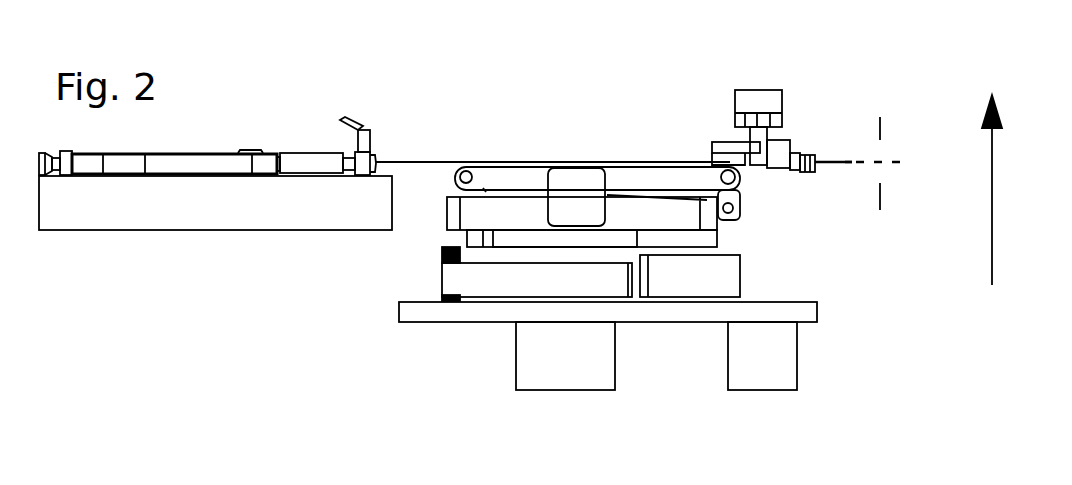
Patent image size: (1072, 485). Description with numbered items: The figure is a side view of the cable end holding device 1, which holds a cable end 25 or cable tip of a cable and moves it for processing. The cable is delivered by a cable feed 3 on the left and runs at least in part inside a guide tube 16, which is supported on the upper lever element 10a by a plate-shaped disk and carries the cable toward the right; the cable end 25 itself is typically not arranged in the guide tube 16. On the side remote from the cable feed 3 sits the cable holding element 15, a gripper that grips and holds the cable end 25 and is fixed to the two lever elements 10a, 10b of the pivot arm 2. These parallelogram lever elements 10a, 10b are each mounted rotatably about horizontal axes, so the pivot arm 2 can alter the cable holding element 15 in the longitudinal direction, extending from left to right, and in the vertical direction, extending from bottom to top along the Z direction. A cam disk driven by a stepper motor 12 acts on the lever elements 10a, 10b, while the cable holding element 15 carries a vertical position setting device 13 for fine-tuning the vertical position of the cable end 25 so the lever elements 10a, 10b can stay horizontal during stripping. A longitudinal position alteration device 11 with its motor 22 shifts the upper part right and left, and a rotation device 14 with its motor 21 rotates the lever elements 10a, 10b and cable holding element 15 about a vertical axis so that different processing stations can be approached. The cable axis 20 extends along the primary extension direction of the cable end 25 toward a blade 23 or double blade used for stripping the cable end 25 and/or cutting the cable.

The cable end holding device 1 is at (891, 64).
The pivot arm 2 is at (597, 100).
The cable feed 3 is at (162, 262).
The upper lever element 10a is at (485, 172).
The lower lever element 10b is at (718, 250).
The longitudinal position alteration device 11 is at (452, 218).
The stepper motor 12 is at (593, 178).
The vertical position setting device 13 is at (723, 142).
The rotation device 14 is at (497, 285).
The cable holding element 15 is at (775, 167).
The guide tube 16 is at (408, 160).
The cable axis 20 is at (897, 163).
The motor 21 is at (762, 378).
The motor 22 is at (567, 378).
The blade 23 is at (878, 120).
The cable end 25 is at (841, 186).